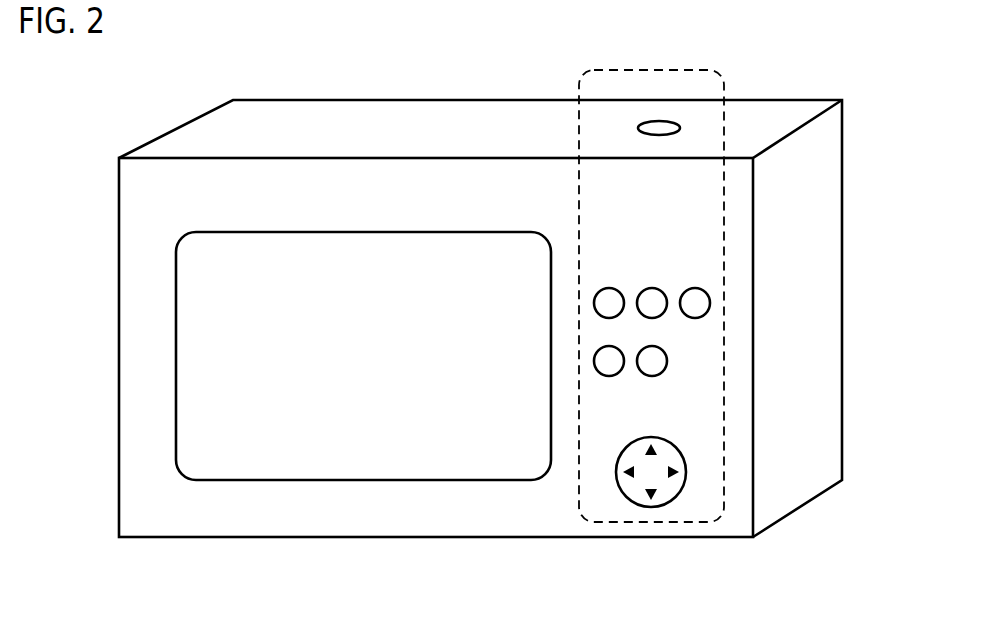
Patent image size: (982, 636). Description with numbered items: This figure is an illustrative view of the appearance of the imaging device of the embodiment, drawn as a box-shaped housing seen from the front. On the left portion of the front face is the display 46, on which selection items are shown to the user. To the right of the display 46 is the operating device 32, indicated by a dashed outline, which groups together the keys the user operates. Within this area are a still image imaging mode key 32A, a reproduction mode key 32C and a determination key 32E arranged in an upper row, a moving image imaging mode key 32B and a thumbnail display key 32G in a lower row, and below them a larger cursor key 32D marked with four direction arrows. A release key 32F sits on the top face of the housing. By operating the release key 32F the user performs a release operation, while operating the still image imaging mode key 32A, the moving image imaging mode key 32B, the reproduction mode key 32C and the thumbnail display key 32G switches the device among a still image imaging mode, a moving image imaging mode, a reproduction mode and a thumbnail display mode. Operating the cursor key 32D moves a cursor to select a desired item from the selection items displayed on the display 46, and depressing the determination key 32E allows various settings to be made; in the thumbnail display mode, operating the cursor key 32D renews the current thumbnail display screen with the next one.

The operating device 32 is at (722, 78).
The still image imaging mode key 32A is at (609, 288).
The moving image imaging mode key 32B is at (606, 377).
The reproduction mode key 32C is at (652, 288).
The cursor key 32D is at (685, 453).
The determination key 32E is at (710, 303).
The release key 32F is at (680, 128).
The thumbnail display key 32G is at (667, 360).
The display 46 is at (407, 232).